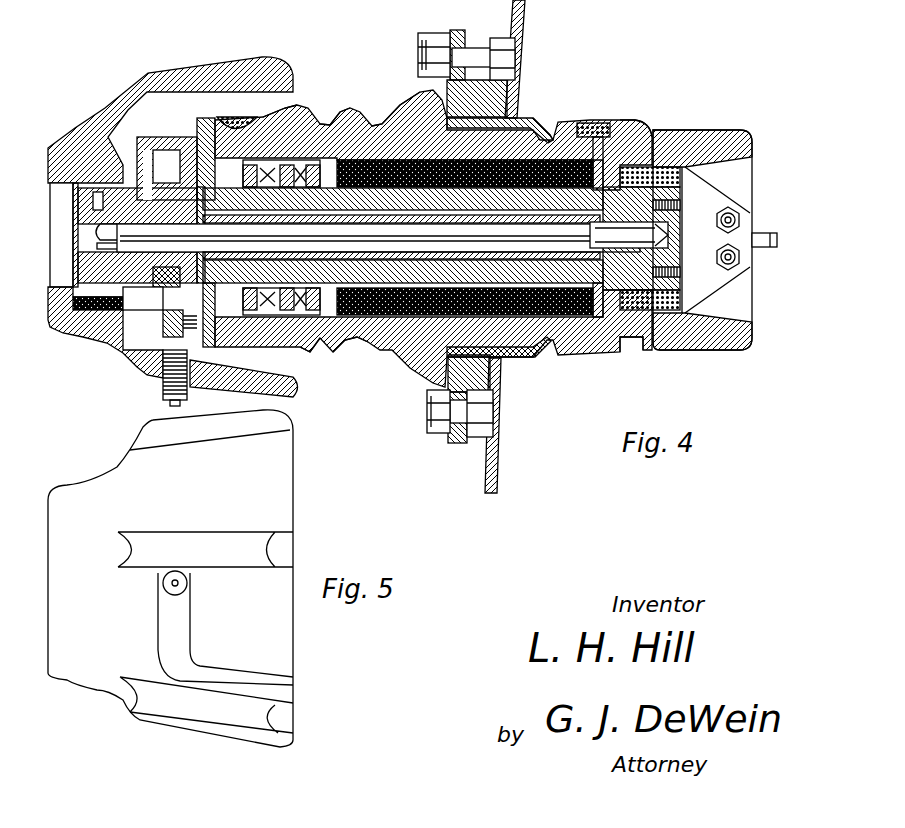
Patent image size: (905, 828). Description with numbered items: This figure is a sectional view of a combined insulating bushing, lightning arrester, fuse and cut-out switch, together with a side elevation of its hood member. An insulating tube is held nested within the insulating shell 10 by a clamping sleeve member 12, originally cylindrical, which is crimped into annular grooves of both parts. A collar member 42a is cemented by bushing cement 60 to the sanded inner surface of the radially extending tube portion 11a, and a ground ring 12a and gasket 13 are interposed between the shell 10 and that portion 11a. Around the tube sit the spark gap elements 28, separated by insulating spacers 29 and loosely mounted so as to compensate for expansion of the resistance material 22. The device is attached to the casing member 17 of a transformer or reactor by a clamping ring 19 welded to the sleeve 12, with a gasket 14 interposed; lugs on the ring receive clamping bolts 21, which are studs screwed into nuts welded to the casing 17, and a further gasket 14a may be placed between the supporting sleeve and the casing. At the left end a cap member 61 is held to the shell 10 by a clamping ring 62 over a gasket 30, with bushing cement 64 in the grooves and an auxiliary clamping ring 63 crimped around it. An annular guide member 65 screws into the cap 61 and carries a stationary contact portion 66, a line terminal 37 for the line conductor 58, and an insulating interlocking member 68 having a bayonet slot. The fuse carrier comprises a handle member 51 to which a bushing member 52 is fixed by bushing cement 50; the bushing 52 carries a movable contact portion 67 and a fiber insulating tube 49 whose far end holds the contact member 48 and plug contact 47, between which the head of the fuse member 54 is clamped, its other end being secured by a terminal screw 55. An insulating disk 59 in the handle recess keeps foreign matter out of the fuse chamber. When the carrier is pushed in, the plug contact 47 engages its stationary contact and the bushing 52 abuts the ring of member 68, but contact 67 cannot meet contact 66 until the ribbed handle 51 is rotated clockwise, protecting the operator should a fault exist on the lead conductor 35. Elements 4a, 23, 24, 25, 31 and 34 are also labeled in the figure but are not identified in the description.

In FIG. 4, the gasket ring 4a is at (648, 165).
In FIG. 4, the insulating shell 10 is at (303, 117).
In FIG. 4, the tube portion 11a is at (690, 130).
In FIG. 4, the sleeve member 12 is at (568, 120).
In FIG. 4, the ground ring 12a is at (594, 125).
In FIG. 4, the gasket 13 is at (632, 125).
In FIG. 4, the gasket 14 is at (447, 385).
In FIG. 4, the gasket 14a is at (500, 372).
In FIG. 4, the casing member 17 is at (519, 30).
In FIG. 4, the clamping ring 19 is at (460, 30).
In FIG. 4, the clamping bolts 21 is at (421, 47).
In FIG. 4, the resistance material 22 is at (378, 350).
In FIG. 4, the body rib 23 is at (347, 157).
In FIG. 4, the body groove 24 is at (333, 352).
In FIG. 4, the body rib 25 is at (328, 157).
In FIG. 4, the spark gap elements 28 is at (300, 231).
In FIG. 4, the insulating spacers 29 is at (281, 234).
In FIG. 4, the gasket 30 is at (205, 137).
In FIG. 4, the body lip 31 is at (307, 350).
In FIG. 4, the terminal plate 34 is at (713, 205).
In FIG. 4, the lead conductor 35 is at (770, 235).
In FIG. 4, the line terminal 37 is at (165, 325).
In FIG. 4, the collar member 42a is at (652, 345).
In FIG. 4, the plug contact 47 is at (630, 352).
In FIG. 4, the contact member 48 is at (372, 233).
In FIG. 4, the fiber insulating tube 49 is at (110, 248).
In FIG. 4, the bushing cement 50 is at (120, 303).
In FIG. 4, the handle member 51 is at (83, 337).
In FIG. 5, the handle member 51 is at (82, 484).
In FIG. 4, the bushing member 52 is at (112, 274).
In FIG. 4, the fuse member 54 is at (92, 233).
In FIG. 4, the terminal screw 55 is at (93, 200).
In FIG. 4, the line conductor 58 is at (170, 400).
In FIG. 5, the line conductor 58 is at (187, 585).
In FIG. 4, the disk 59 is at (52, 262).
In FIG. 4, the bushing cement 60 is at (680, 300).
In FIG. 4, the cap member 61 is at (196, 120).
In FIG. 4, the clamping ring 62 is at (245, 357).
In FIG. 4, the auxiliary clamping ring 63 is at (262, 120).
In FIG. 4, the bushing cement 64 is at (290, 112).
In FIG. 4, the guide member 65 is at (150, 298).
In FIG. 4, the stationary contact portion 66 is at (165, 140).
In FIG. 4, the movable contact portion 67 is at (166, 166).
In FIG. 4, the insulating interlocking member 68 is at (160, 287).